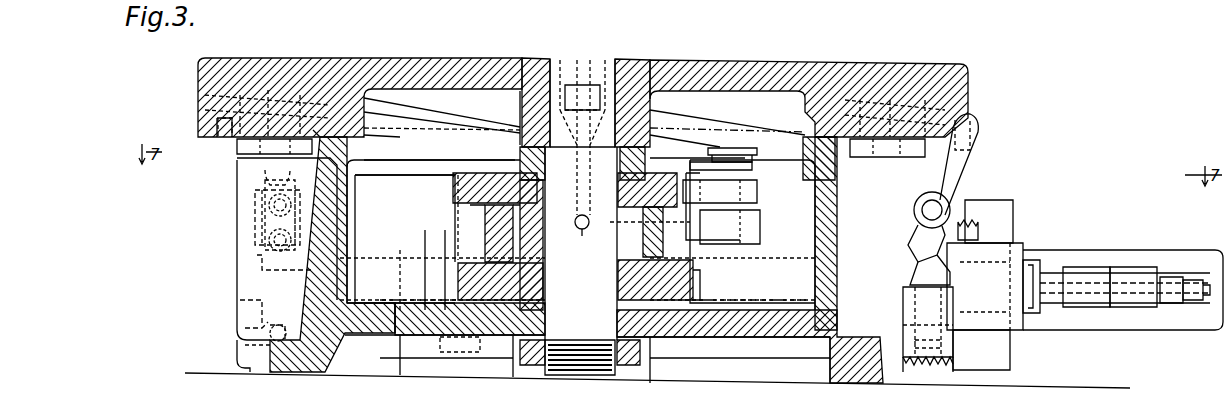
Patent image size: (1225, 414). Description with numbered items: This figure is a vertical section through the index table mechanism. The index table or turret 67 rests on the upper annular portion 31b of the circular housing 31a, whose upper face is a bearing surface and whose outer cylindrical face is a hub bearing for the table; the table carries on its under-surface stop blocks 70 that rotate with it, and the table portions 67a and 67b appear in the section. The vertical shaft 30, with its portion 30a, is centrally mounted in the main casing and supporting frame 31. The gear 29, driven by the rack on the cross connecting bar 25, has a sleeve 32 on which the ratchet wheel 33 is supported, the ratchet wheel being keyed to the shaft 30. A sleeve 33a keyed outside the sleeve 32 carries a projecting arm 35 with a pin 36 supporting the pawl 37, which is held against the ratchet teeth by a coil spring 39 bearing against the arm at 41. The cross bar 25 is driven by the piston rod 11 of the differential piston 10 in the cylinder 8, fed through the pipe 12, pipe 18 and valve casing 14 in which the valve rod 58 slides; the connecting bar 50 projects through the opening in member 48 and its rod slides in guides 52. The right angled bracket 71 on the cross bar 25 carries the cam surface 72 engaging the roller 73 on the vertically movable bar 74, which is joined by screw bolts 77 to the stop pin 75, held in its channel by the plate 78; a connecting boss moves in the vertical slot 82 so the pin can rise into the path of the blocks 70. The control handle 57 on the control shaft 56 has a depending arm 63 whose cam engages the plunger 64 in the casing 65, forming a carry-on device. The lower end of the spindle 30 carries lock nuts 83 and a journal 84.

The index table 67 is at (358, 60).
The head block portion 67a is at (312, 154).
The head block chamber 67b is at (727, 118).
The stop blocks 70 is at (237, 148).
The upper annular portion 31b is at (366, 141).
The circular housing 31a is at (347, 205).
The main casing and supporting frame 31 is at (347, 240).
The ratchet wheel 33 is at (453, 185).
The sleeve 33a is at (695, 272).
The vertical shaft 30 is at (600, 318).
The spindle portion 30a is at (656, 148).
The sleeve 32 is at (545, 255).
The gear 29 is at (701, 290).
The cross connecting bar 25 is at (400, 245).
The piston rod 11 is at (430, 232).
The differential piston 10 is at (780, 282).
The pin 36 is at (728, 155).
The coil spring 39 is at (745, 162).
The pawl 37 is at (758, 193).
The spring bearing point on arm 41 is at (690, 230).
The projecting arm 35 is at (762, 228).
The stop pin 75 is at (268, 160).
The vertical slot 82 is at (255, 193).
The screw bolts 77 is at (262, 237).
The plate 78 is at (248, 275).
The vertically movable bar 74 is at (240, 300).
The cam surface 72 is at (245, 328).
The roller 73 is at (245, 345).
The right angled bracket 71 is at (360, 336).
The journal 84 is at (525, 345).
The lock nuts 83 is at (540, 355).
The control handle 57 is at (965, 157).
The control shaft 56 is at (950, 200).
The arm 63 is at (910, 235).
The plunger 64 is at (920, 270).
The casing 65 is at (903, 292).
The pipe 18 is at (950, 370).
The cylinder 8 is at (1000, 210).
The pipe 12 is at (978, 224).
The valve casing 14 is at (997, 318).
The guides 52 is at (1085, 268).
The valve rod 58 is at (1125, 268).
The member with rectangular opening 48 is at (1145, 268).
The connecting bar 50 is at (1192, 278).